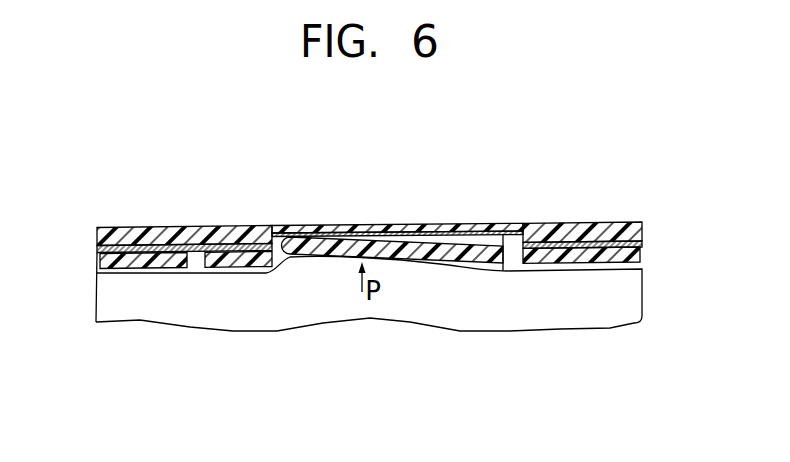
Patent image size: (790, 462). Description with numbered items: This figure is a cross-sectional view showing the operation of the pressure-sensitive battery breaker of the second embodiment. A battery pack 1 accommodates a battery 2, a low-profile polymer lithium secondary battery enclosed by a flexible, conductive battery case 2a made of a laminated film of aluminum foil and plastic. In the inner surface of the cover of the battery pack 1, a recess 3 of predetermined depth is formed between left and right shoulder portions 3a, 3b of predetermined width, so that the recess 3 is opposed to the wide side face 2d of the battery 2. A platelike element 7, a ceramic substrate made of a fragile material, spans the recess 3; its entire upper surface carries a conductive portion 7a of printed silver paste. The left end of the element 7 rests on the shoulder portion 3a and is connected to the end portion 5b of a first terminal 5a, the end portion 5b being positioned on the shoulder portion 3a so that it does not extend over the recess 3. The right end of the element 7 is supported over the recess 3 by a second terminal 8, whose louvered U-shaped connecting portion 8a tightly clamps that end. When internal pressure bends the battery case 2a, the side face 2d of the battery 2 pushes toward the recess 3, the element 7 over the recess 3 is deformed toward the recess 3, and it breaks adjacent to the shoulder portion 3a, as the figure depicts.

The battery pack 1 is at (369, 187).
The battery 2 is at (369, 326).
The battery case 2a is at (542, 293).
The wide side face of the battery 2d is at (320, 259).
The recess 3 is at (369, 188).
The shoulder portion 3a is at (259, 227).
The shoulder portion 3b is at (543, 228).
The first terminal 5a is at (127, 228).
The end portion of the first terminal 5b is at (237, 228).
The element 7 is at (227, 282).
The conductive portion 7a is at (348, 227).
The second terminal 8 is at (584, 224).
The U-shaped connecting portion 8a is at (455, 228).